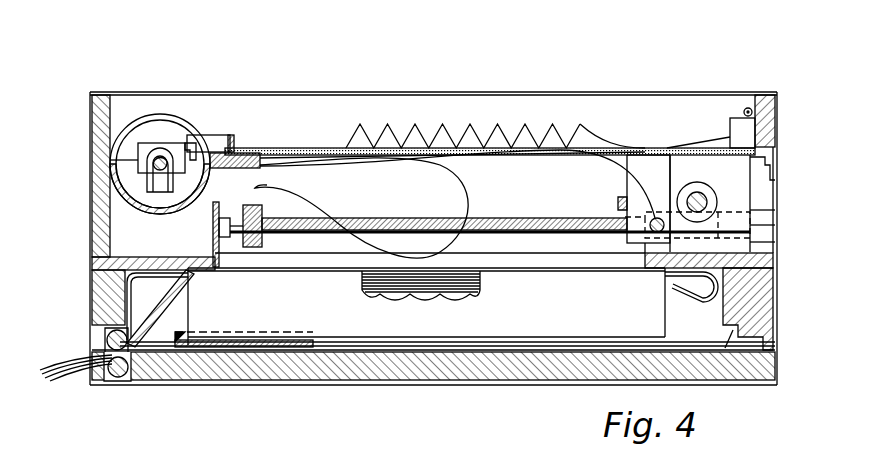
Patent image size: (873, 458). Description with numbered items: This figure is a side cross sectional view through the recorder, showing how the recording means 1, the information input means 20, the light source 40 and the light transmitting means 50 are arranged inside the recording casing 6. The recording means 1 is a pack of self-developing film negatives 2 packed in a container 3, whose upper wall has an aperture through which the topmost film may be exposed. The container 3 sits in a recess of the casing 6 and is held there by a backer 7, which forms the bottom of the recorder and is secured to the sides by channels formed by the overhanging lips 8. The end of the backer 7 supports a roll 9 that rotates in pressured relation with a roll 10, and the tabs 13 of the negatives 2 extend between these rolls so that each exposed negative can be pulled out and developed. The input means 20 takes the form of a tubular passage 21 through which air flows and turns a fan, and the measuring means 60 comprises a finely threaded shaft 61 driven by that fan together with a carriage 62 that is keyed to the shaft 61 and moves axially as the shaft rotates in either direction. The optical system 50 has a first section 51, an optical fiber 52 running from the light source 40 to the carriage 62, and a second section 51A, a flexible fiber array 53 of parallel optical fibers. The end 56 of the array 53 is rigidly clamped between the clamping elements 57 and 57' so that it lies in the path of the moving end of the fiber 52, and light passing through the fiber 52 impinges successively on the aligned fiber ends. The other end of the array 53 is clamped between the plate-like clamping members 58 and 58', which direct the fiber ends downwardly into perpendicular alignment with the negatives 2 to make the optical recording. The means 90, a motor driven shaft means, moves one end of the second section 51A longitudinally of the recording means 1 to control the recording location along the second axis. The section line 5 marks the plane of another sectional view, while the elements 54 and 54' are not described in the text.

The recording means 1 is at (339, 276).
The film negatives 2 is at (401, 284).
The container 3 is at (170, 268).
The section line 5- 5 is at (236, 113).
The recording casing 6 is at (776, 246).
The backer 7 is at (572, 384).
The overhanging lips 8 is at (477, 382).
The roll 9 is at (119, 378).
The roll 10 is at (106, 341).
The tabs 13 is at (56, 376).
The information input means 20 is at (139, 118).
The tubular passage 21 is at (160, 120).
The light source 40 is at (738, 128).
The means for transmitting light 50 is at (364, 108).
The first section 51 is at (420, 122).
The second section 51A is at (484, 200).
The optical fiber 52 is at (497, 122).
The fiber array 53 is at (465, 193).
The support plate 54 is at (208, 103).
The hook 54' is at (217, 168).
The end of the array 56 is at (262, 165).
The clamping element 57 is at (261, 125).
The clamping element 57' is at (457, 167).
The clamping member 58 is at (303, 217).
The clamping member 58' is at (200, 234).
The measuring means 60 is at (159, 150).
The threaded shaft 61 is at (163, 178).
The carriage 62 is at (147, 152).
The means for controlling location along second axis 90 is at (267, 250).